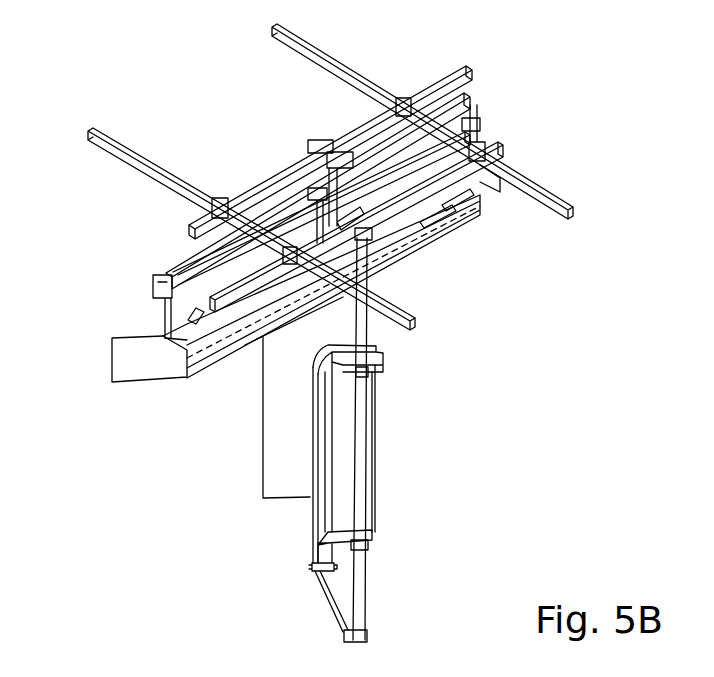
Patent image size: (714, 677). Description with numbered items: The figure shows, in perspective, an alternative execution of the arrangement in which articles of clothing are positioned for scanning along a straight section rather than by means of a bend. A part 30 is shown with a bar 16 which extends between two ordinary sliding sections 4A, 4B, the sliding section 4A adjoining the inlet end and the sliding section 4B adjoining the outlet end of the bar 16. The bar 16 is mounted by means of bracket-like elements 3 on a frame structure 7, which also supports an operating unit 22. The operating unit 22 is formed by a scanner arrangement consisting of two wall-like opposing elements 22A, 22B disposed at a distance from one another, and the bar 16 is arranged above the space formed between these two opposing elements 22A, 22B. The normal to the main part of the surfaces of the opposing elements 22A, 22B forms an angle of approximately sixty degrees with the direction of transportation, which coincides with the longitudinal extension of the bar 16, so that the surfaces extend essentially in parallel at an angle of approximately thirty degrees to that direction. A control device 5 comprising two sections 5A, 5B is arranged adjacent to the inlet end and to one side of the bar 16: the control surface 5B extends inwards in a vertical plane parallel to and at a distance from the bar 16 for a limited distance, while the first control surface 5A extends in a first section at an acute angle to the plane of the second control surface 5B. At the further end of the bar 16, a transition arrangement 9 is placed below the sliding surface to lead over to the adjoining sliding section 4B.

The bracket-like element 3 is at (152, 336).
The sliding section 4A is at (165, 378).
The sliding section 4B is at (503, 183).
The control device 5 is at (279, 275).
The first control surface 5A is at (125, 357).
The control surface 5B is at (333, 287).
The frame structure 7 is at (188, 250).
The transition arrangement 9 is at (453, 213).
The bar 16 is at (407, 240).
The operating unit 22 is at (408, 435).
The opposing element 22A is at (313, 515).
The opposing element 22B is at (272, 458).
The part 30 is at (452, 318).